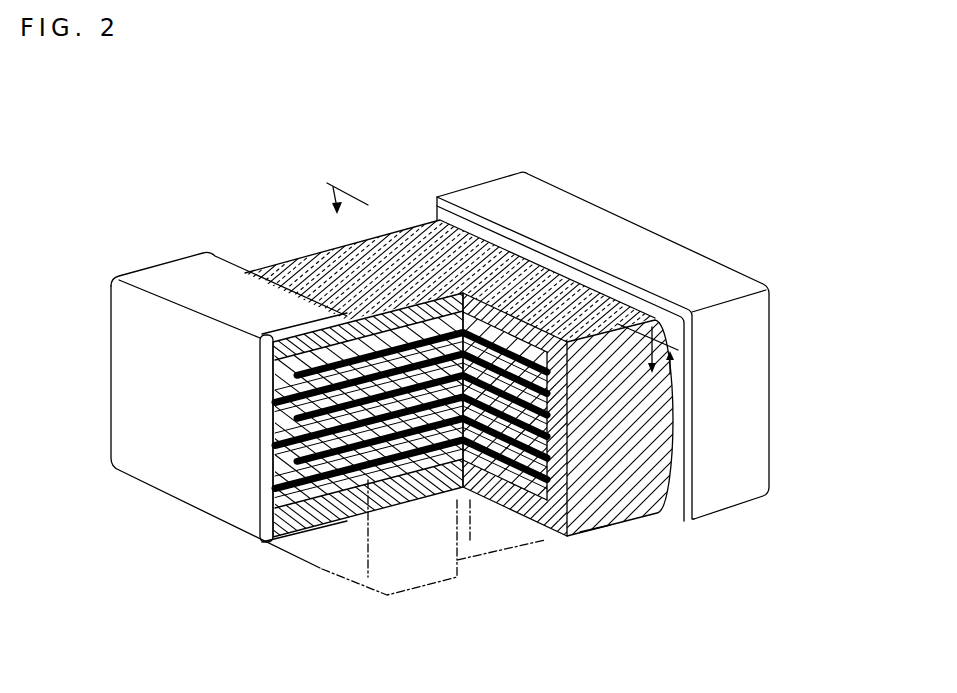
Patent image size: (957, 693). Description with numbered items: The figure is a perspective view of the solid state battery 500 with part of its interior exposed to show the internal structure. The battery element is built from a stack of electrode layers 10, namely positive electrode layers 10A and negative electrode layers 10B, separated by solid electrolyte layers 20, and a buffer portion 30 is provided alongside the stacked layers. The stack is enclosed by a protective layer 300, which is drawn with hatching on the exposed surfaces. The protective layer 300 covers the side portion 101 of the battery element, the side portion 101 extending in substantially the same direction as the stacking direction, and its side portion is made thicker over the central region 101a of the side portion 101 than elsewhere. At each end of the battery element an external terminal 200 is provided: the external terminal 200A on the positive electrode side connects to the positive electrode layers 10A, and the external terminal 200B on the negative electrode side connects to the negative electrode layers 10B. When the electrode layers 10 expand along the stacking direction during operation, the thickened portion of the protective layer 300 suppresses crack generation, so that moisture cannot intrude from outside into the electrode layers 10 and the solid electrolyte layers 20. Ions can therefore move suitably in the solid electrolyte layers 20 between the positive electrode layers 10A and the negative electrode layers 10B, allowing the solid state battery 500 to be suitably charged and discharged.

The solid state battery 500 is at (744, 172).
The protective layer 300 is at (415, 245).
The external terminal 200 is at (424, 342).
The external terminal on positive electrode side 200A is at (576, 212).
The external terminal on negative electrode side 200B is at (157, 279).
The electrode layer 10 is at (411, 503).
The positive electrode layer 10A is at (345, 385).
The negative electrode layer 10B is at (433, 345).
The solid electrolyte layer 20 is at (478, 330).
The buffer portion 30 is at (582, 440).
The side portion of battery element 101 is at (582, 383).
The central region of side portion of battery element 101a is at (600, 520).